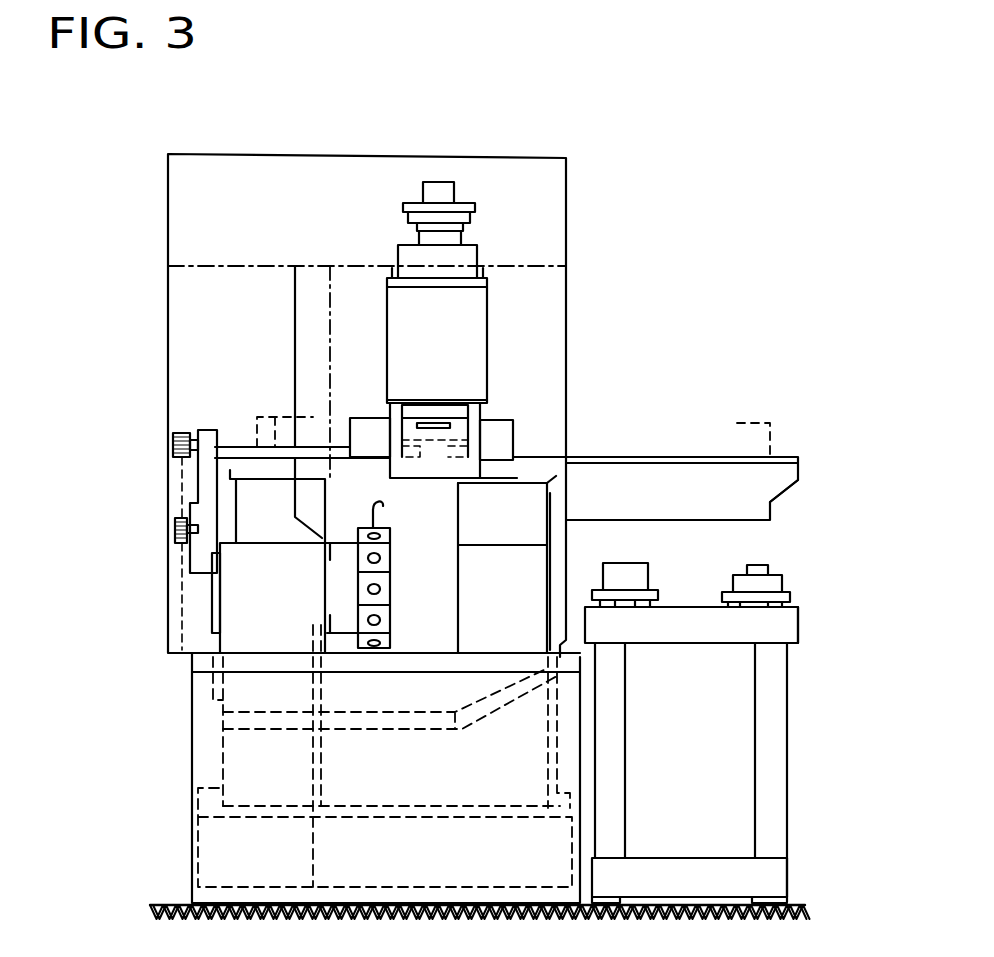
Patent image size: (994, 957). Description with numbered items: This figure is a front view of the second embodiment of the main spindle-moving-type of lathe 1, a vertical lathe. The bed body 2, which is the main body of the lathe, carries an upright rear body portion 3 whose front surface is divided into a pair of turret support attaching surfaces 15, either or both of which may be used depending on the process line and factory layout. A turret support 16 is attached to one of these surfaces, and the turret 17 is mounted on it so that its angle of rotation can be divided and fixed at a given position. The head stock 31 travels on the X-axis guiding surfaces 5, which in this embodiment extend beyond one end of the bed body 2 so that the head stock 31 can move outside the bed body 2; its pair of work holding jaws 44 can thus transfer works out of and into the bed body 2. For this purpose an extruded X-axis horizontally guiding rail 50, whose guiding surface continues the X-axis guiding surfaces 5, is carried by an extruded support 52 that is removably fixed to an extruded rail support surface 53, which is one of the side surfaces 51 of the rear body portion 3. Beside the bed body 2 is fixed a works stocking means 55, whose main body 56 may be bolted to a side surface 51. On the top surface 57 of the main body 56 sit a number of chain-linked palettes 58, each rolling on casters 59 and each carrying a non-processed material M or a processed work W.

The main spindle-moving-type of lathe 1 is at (578, 144).
The bed body 2 is at (590, 763).
The rear body portion 3 is at (424, 458).
The X-axis guiding surfaces 5 is at (240, 445).
The turret support attaching surfaces 15 is at (513, 626).
The turret support 16 is at (285, 629).
The turret 17 is at (388, 580).
The head stock 31 is at (448, 366).
The work holding jaws 44 is at (470, 440).
The extruded X-axis horizontally guiding rail 50 is at (683, 457).
The side surfaces 51 is at (212, 610).
The extruded support 52 is at (787, 475).
The extruded rail support surface 53 is at (215, 482).
The works stocking means 55 is at (797, 728).
The main body 56 is at (772, 805).
The top surface 57 is at (683, 617).
The palettes 58 is at (790, 588).
The casters 59 is at (800, 612).
The non-processed material M is at (630, 578).
The processed work W is at (762, 563).